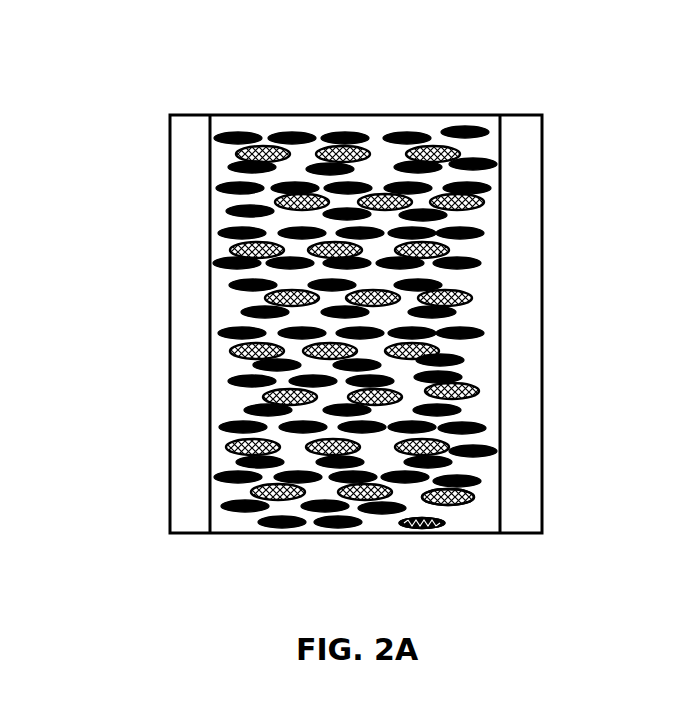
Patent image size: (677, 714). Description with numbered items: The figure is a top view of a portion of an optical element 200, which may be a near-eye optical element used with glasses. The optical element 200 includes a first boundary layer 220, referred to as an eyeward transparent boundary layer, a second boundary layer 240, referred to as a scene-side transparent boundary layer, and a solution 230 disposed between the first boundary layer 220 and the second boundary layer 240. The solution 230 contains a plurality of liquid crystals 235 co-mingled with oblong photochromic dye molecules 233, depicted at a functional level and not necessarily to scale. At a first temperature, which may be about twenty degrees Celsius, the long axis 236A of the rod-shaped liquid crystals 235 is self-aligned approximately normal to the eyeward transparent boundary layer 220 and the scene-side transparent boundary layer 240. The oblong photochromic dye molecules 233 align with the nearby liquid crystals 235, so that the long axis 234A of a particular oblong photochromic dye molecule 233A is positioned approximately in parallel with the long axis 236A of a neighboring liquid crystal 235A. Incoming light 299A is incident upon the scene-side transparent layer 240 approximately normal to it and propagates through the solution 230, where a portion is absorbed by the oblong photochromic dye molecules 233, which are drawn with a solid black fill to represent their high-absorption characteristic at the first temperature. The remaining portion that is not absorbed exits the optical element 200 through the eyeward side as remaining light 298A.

The optical element 200 is at (267, 581).
The first boundary layer 220 is at (170, 102).
The solution 230 is at (215, 102).
The oblong photochromic dye molecules 233 is at (385, 100).
The liquid crystals 235 is at (417, 100).
The second boundary layer 240 is at (542, 103).
The remaining light 298A is at (210, 331).
The incoming light 299A is at (555, 329).
The oblong photochromic dye molecule 233A is at (408, 528).
The long axis of oblong photochromic dye molecule 234A is at (445, 526).
The liquid crystal 235A is at (455, 504).
The long axis of liquid crystal 236A is at (473, 499).